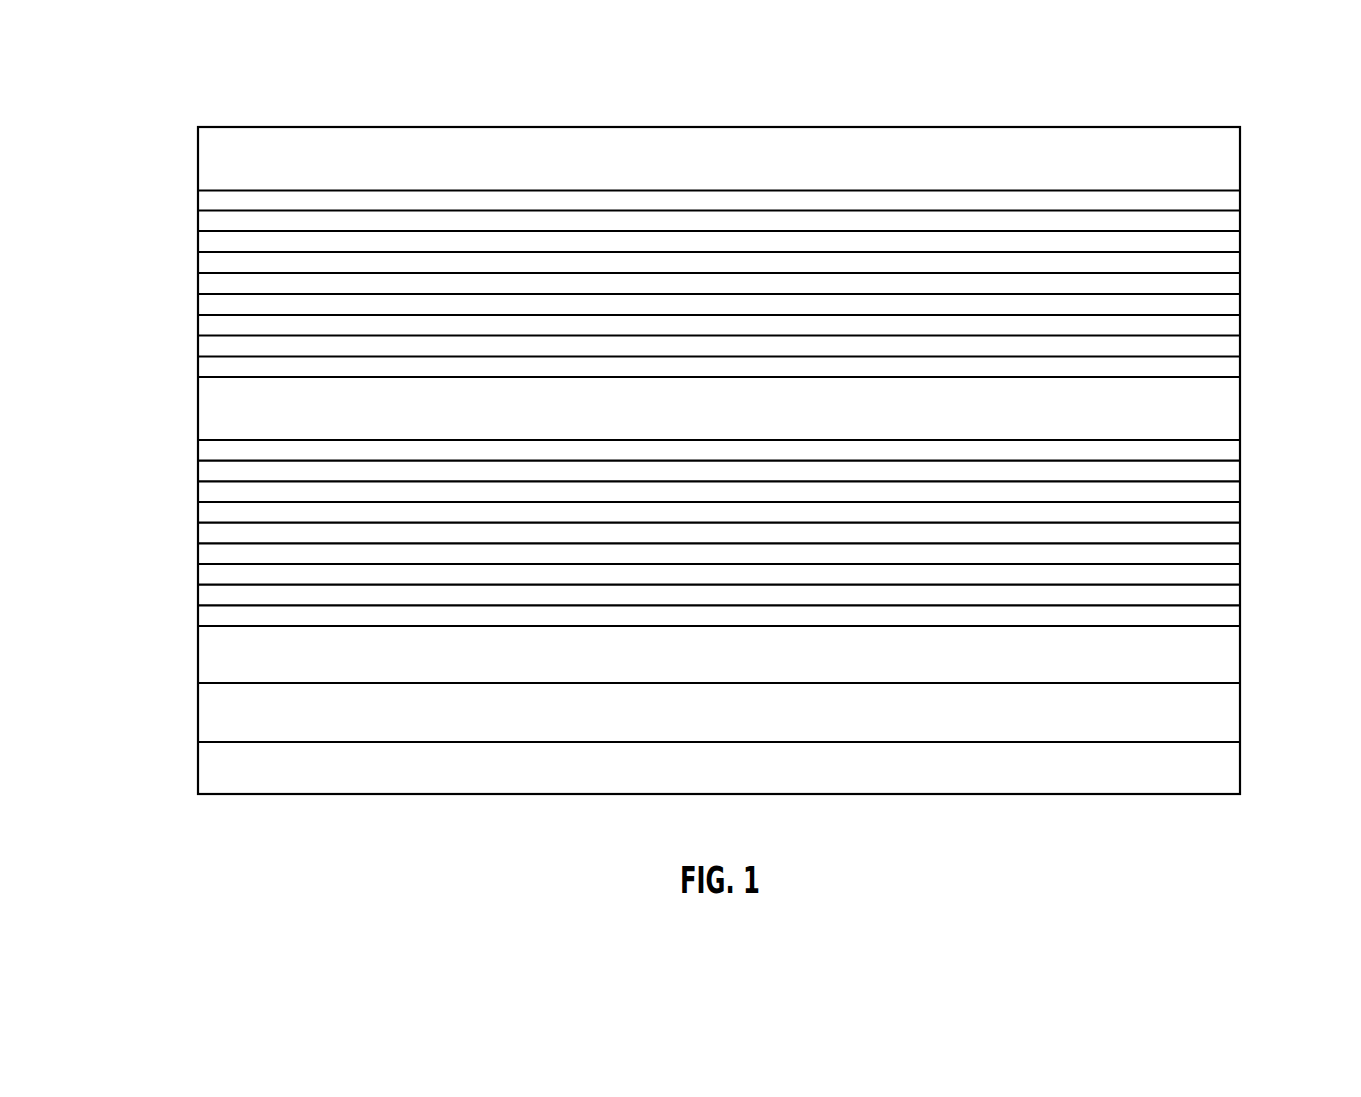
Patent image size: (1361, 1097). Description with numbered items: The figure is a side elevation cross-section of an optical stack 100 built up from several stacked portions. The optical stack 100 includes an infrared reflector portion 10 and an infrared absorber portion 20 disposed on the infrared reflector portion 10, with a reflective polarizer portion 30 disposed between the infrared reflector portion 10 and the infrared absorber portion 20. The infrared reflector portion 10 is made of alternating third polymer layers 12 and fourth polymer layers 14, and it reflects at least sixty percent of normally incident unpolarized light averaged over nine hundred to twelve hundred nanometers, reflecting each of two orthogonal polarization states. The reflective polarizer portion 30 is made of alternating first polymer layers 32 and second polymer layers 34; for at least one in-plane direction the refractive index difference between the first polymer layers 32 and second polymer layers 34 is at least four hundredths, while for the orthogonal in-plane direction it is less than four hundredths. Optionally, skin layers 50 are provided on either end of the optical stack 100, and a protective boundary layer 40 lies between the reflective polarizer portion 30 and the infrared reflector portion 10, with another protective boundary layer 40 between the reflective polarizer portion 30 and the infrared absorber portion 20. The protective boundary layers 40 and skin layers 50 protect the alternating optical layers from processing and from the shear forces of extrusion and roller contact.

The optical stack 100 is at (733, 415).
The skin layer 50 is at (1165, 140).
The infrared reflector portion 10 is at (712, 270).
The third polymer layer 12 is at (1232, 198).
The fourth polymer layer 14 is at (1232, 220).
The protective boundary layer 40 is at (1232, 393).
The reflective polarizer portion 30 is at (712, 520).
The first polymer layer 32 is at (1232, 448).
The second polymer layer 34 is at (1232, 470).
The infrared absorber portion 20 is at (182, 682).